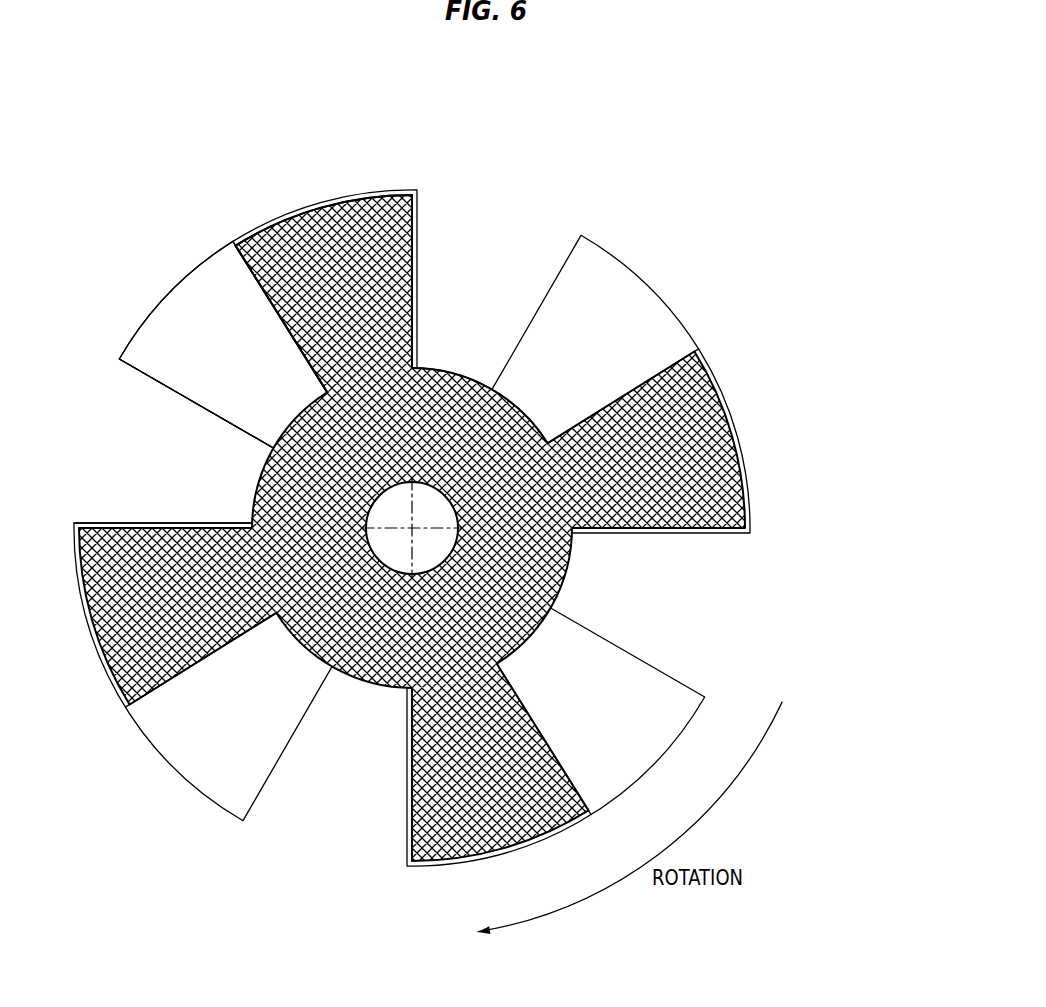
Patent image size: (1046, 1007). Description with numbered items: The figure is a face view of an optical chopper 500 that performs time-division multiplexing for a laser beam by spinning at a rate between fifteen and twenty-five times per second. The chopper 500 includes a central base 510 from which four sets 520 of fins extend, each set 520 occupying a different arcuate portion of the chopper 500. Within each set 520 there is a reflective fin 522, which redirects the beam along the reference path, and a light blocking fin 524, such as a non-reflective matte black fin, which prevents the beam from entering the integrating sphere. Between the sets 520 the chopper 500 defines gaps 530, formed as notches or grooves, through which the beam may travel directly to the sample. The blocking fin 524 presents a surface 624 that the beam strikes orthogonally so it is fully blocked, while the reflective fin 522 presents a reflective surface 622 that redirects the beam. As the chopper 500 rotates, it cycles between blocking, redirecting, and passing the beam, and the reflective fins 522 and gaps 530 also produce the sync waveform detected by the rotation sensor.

The optical chopper 500 is at (461, 457).
The base 510 is at (263, 490).
The set of fins 520 is at (469, 317).
The reflective fin 522 is at (397, 338).
The light blocking fin 524 is at (515, 346).
The gap 530 is at (518, 216).
The reflective surface 622 is at (196, 382).
The surface of blocking fin 624 is at (410, 297).